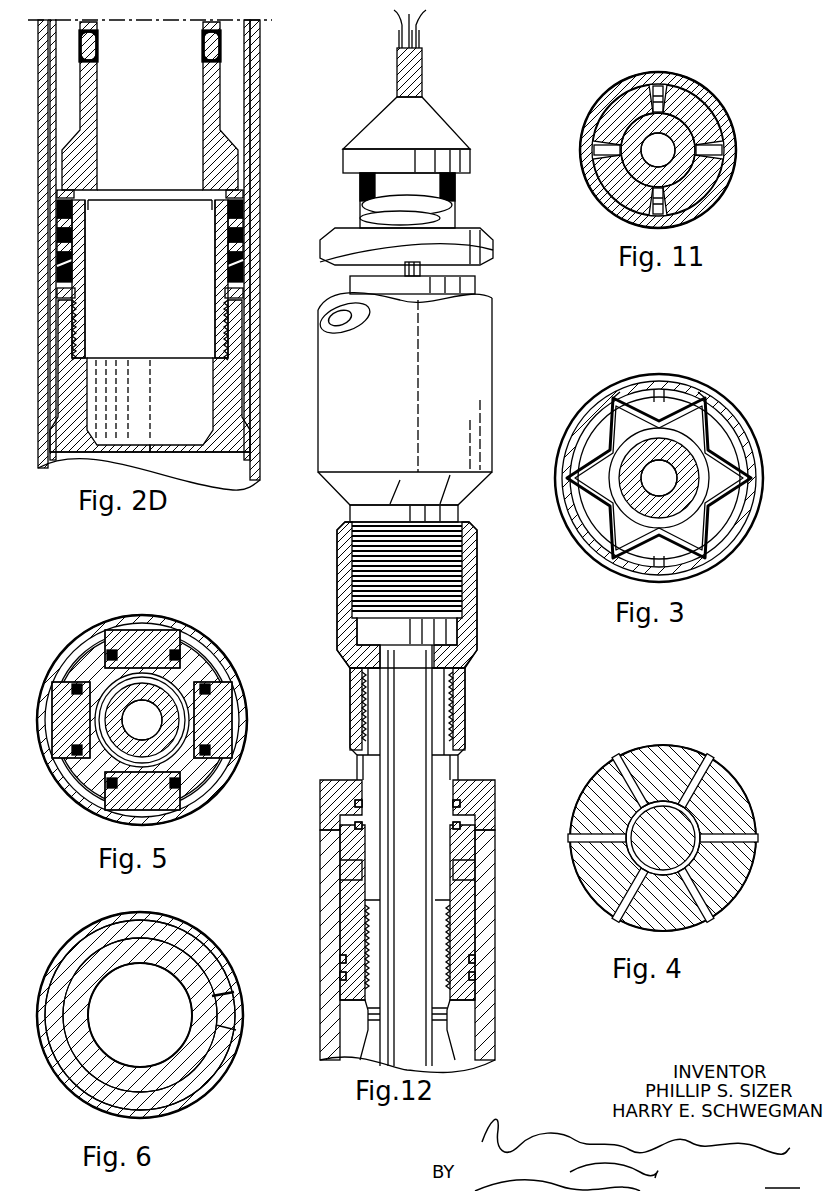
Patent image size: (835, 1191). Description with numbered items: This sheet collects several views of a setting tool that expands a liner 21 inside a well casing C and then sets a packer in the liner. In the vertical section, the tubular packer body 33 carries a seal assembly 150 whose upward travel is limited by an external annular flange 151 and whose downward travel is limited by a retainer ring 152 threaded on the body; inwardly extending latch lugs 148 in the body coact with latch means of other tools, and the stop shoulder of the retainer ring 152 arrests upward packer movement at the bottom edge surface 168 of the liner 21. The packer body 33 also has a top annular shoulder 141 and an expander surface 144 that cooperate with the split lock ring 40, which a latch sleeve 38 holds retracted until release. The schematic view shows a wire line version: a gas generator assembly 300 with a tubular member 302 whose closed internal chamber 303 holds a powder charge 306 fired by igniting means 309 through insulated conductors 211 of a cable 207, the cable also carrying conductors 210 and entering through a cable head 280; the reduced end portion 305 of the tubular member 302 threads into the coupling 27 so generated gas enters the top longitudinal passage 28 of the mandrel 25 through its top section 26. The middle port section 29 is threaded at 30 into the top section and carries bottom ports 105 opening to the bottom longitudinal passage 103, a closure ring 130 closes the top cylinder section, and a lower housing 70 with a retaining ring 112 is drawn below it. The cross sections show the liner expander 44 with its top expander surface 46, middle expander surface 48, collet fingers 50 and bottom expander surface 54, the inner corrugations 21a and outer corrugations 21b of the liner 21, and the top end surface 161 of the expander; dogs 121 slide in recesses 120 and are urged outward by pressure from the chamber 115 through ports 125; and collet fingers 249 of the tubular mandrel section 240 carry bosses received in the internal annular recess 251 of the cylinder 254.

In FIG. 2D, the well casing C is at (260, 145).
In FIG. 3, the well casing C is at (762, 520).
In FIG. 2D, the liner 21 is at (248, 100).
In FIG. 3, the inner corrugations 21a is at (655, 420).
In FIG. 3, the outer corrugations 21b is at (720, 420).
In FIG. 12, the mandrel 25 is at (356, 772).
In FIG. 5, the mandrel 25 is at (170, 690).
In FIG. 12, the top section 26 is at (444, 768).
In FIG. 12, the coupling 27 is at (470, 632).
In FIG. 12, the top longitudinal passage 28 is at (420, 708).
In FIG. 3, the middle port section 29 is at (640, 545).
In FIG. 4, the threads 30 is at (688, 826).
In FIG. 2D, the packer body 33 is at (190, 122).
In FIG. 6, the packer body 33 is at (84, 1010).
In FIG. 6, the latch sleeve 38 is at (232, 976).
In FIG. 6, the split lock ring 40 is at (205, 956).
In FIG. 4, the liner expander 44 is at (592, 903).
In FIG. 3, the top expander surface 46 is at (612, 410).
In FIG. 3, the middle expander surface 48 is at (640, 400).
In FIG. 4, the collet fingers 50 is at (720, 776).
In FIG. 3, the bottom expander surface 54 is at (686, 400).
In FIG. 12, the lower housing 70 is at (500, 890).
In FIG. 5, the bottom longitudinal passage 103 is at (150, 735).
In FIG. 3, the bottom ports 105 is at (650, 480).
In FIG. 12, the retaining ring 112 is at (440, 1017).
In FIG. 5, the chamber 115 is at (108, 762).
In FIG. 5, the recesses 120 is at (200, 690).
In FIG. 5, the dogs 121 is at (145, 635).
In FIG. 5, the ports 125 is at (190, 722).
In FIG. 12, the closure ring 130 is at (490, 802).
In FIG. 6, the top annular shoulder 141 is at (228, 1036).
In FIG. 6, the expander surface 144 is at (216, 1014).
In FIG. 2D, the latch lugs 148 is at (98, 48).
In FIG. 2D, the seal assembly 150 is at (236, 212).
In FIG. 2D, the external annular flange 151 is at (233, 185).
In FIG. 2D, the retainer ring 152 is at (232, 322).
In FIG. 3, the top end surface 161 is at (630, 446).
In FIG. 2D, the bottom edge surface 168 is at (242, 416).
In FIG. 12, the cable 207 is at (423, 72).
In FIG. 12, the electric conductors 210 is at (392, 30).
In FIG. 12, the electric conductors 211 is at (400, 268).
In FIG. 11, the tubular mandrel section 240 is at (690, 102).
In FIG. 11, the collet fingers 249 is at (722, 155).
In FIG. 11, the internal annular recess 251 is at (668, 78).
In FIG. 11, the cylinder 254 is at (726, 122).
In FIG. 12, the cable head cone 280 is at (440, 125).
In FIG. 12, the gas generator assembly 300 is at (432, 407).
In FIG. 12, the tubular member 302 is at (495, 335).
In FIG. 12, the internal chamber 303 is at (352, 325).
In FIG. 12, the reduced end portion 305 is at (465, 570).
In FIG. 12, the powder charge 306 is at (478, 285).
In FIG. 12, the igniting means 309 is at (400, 268).